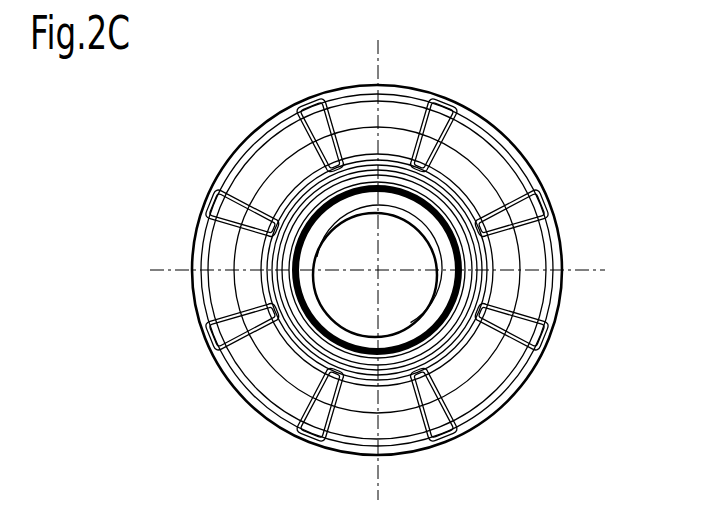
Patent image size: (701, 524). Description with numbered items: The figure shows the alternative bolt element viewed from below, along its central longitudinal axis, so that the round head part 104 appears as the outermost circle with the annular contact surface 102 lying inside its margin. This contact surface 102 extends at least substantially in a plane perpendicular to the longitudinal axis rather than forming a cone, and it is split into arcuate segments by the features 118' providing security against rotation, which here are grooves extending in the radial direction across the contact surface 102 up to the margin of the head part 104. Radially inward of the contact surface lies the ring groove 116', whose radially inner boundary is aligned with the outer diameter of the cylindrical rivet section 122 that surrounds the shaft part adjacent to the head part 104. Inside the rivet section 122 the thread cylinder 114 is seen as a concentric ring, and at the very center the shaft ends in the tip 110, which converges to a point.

The annular contact surface 102 is at (265, 163).
The head part 104 is at (344, 70).
The tip 110 is at (398, 255).
The thread cylinder 114 is at (428, 212).
The ring groove 116' is at (315, 270).
The features providing security against rotation 118' is at (380, 304).
The rivet section 122 is at (390, 165).